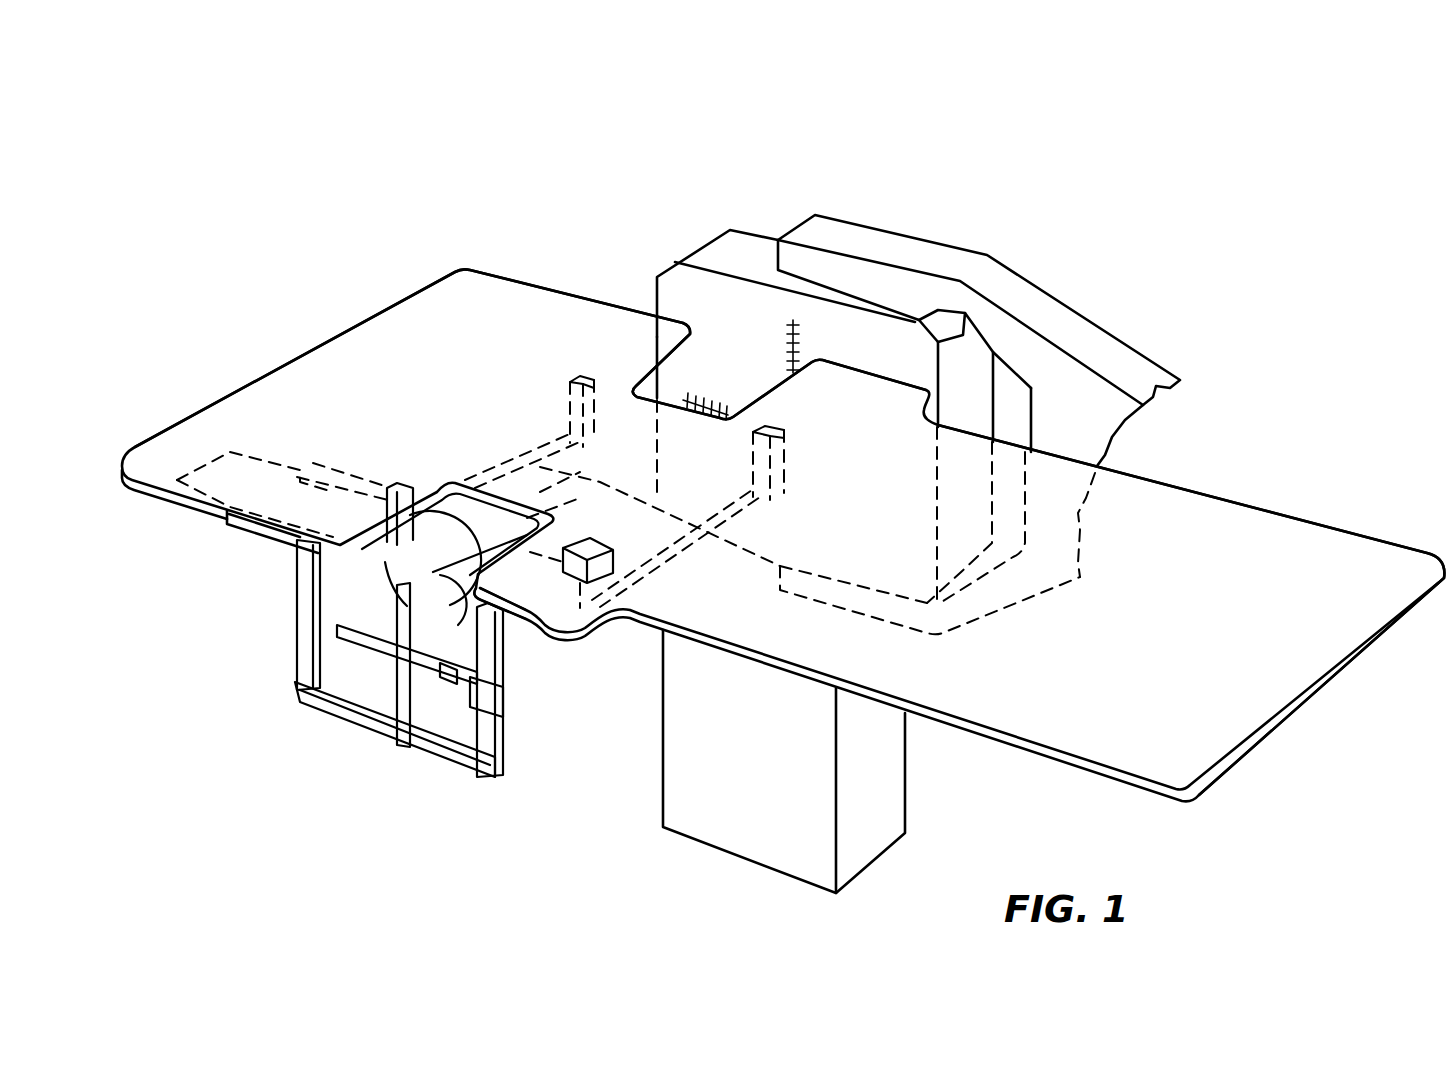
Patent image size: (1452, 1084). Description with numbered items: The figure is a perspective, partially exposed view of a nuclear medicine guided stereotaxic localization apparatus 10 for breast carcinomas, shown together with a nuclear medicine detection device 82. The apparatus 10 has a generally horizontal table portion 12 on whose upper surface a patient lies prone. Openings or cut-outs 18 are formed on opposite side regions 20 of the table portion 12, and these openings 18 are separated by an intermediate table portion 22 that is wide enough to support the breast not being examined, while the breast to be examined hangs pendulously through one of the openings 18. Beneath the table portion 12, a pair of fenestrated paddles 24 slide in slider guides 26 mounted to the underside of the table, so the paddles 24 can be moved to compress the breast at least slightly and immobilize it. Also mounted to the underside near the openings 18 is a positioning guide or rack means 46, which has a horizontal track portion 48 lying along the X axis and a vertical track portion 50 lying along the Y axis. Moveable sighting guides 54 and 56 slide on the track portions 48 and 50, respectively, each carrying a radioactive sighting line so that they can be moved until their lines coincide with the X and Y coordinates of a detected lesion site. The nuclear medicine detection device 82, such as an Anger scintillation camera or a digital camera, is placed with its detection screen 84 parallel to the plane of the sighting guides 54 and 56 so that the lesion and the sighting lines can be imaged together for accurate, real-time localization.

The nuclear medicine guided stereotaxic localization apparatus 10 is at (1327, 452).
The table portion 12 is at (1125, 511).
The openings 18 is at (700, 378).
The side regions 20 is at (617, 303).
The intermediate table portion 22 is at (637, 432).
The fenestrated paddles 24 is at (426, 563).
The slider guides 26 is at (523, 622).
The rack means 46 is at (457, 774).
The horizontal track portion 48 is at (357, 717).
The vertical track portion 50 is at (490, 730).
The sighting guide 54 is at (405, 757).
The sighting guide 56 is at (512, 700).
The nuclear medicine detection device 82 is at (717, 217).
The detection screen 84 is at (748, 300).